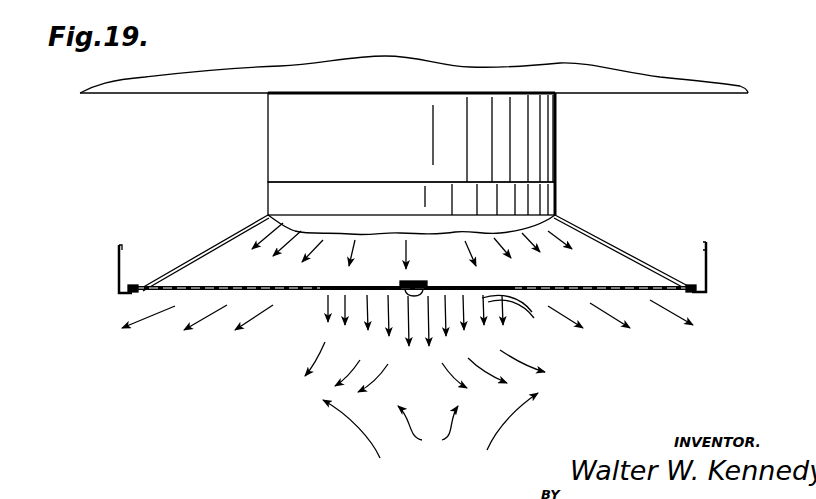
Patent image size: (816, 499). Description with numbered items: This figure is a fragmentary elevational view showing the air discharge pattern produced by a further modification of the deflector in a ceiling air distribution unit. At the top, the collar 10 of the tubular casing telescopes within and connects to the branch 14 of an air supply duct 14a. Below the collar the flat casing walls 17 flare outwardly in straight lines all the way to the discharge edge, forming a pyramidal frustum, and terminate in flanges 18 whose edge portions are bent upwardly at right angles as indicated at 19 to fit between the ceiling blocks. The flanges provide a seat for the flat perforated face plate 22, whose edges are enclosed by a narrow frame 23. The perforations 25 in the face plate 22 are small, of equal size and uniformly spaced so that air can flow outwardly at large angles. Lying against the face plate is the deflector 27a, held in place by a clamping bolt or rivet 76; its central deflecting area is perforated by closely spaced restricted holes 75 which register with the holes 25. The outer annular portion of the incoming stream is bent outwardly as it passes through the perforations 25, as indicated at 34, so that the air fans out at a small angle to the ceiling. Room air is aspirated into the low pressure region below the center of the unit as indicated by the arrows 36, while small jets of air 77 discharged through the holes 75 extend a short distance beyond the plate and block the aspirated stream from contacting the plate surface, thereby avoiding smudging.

The air supply duct 14a is at (192, 87).
The branch of air supply duct 14 is at (268, 143).
The collar 10 is at (268, 197).
The casing walls 17 is at (618, 260).
The perforations 25 is at (233, 287).
The restricted holes 75 is at (352, 287).
The clamping bolt or rivet 76 is at (414, 282).
The deflector 27a is at (512, 285).
The flanges 18 is at (118, 276).
The upwardly bent flange edge portion 19 is at (128, 293).
The frame 23 is at (689, 293).
The outwardly bent air stream 34 is at (148, 322).
The perforated face plate 22 is at (580, 296).
The small air jets 77 is at (514, 315).
The aspirated room air 36 is at (442, 440).